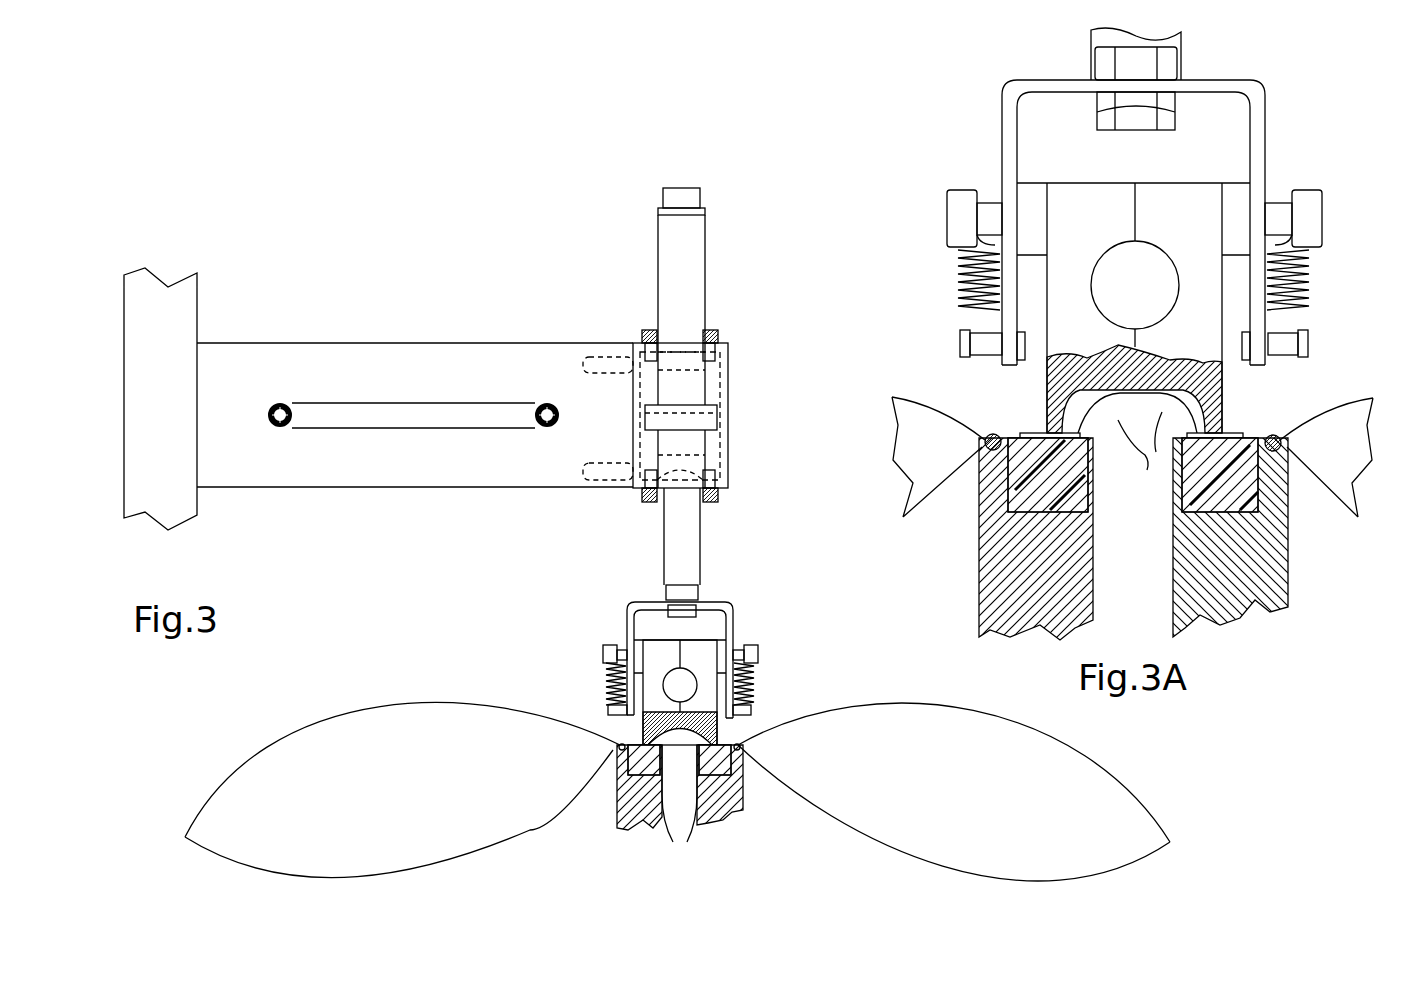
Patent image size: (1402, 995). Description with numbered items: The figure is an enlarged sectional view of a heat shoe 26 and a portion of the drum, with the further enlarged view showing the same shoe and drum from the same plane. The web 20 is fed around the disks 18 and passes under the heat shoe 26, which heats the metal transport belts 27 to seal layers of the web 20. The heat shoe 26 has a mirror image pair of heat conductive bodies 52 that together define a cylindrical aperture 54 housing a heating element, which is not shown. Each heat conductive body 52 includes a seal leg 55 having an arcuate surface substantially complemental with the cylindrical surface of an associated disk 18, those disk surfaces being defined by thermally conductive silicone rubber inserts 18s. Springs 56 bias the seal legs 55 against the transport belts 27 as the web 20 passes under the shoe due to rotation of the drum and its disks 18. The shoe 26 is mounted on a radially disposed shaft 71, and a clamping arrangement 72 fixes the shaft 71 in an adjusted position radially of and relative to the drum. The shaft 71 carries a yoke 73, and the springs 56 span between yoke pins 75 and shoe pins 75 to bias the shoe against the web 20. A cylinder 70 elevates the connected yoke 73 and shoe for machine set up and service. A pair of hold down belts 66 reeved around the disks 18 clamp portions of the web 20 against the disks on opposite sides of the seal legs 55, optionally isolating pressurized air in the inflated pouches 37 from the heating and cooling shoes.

In FIG. 3, the cylinder 70 is at (680, 260).
In FIG. 3, the radially disposed shaft 71 is at (683, 387).
In FIG. 3A, the radially disposed shaft 71 is at (1094, 42).
In FIG. 3, the clamping arrangement 72 is at (748, 416).
In FIG. 3, the yoke 73 is at (733, 628).
In FIG. 3A, the yoke 73 is at (1008, 120).
In FIG. 3, the yoke pins and shoe pins 75 is at (612, 653).
In FIG. 3A, the yoke pins and shoe pins 75 is at (960, 210).
In FIG. 3, the springs 56 is at (752, 680).
In FIG. 3A, the springs 56 is at (960, 275).
In FIG. 3, the heat shoe 26 is at (709, 618).
In FIG. 3A, the heat shoe 26 is at (1244, 382).
In FIG. 3A, the metal transport belts 27 is at (1145, 388).
In FIG. 3A, the heat conductive bodies 52 is at (1120, 180).
In FIG. 3A, the cylindrical aperture 54 is at (1122, 300).
In FIG. 3A, the seal leg 55 is at (1045, 420).
In FIG. 3, the hold down belts 66 is at (620, 745).
In FIG. 3A, the hold down belts 66 is at (990, 436).
In FIG. 3, the inflated pouches 37 is at (420, 800).
In FIG. 3, the disks 18 is at (684, 810).
In FIG. 3A, the disks 18 is at (1170, 594).
In FIG. 3A, the thermally conductive silicone rubber inserts 18s is at (1060, 480).
In FIG. 3A, the web 20 is at (1137, 436).